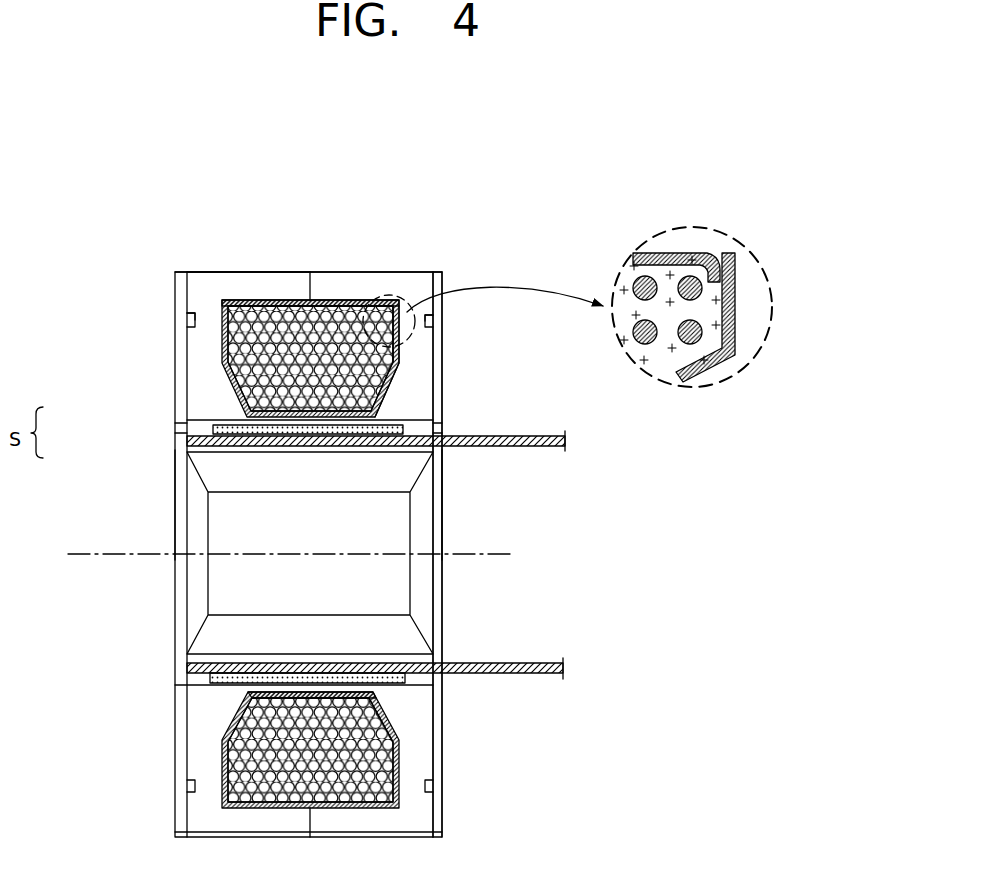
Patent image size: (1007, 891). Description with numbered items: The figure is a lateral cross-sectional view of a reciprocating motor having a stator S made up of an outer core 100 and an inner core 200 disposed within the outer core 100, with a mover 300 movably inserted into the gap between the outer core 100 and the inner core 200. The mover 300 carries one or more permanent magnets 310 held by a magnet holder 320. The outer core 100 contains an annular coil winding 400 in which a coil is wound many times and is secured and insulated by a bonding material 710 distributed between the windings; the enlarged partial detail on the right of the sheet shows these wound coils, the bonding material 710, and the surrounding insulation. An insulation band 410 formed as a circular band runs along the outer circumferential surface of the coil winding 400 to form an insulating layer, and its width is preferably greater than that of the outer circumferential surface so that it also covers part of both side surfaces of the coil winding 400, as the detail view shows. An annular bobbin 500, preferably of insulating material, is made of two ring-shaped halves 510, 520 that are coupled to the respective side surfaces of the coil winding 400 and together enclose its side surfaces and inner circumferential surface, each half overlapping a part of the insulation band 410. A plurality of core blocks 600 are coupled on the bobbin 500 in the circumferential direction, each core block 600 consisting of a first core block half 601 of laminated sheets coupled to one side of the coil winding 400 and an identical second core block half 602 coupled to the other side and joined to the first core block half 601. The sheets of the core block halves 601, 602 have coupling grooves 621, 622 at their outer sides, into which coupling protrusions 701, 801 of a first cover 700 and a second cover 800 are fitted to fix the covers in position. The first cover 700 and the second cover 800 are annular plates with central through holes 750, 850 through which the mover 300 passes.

The outer core 100 is at (303, 319).
The inner core 200 is at (185, 465).
The mover 300 is at (296, 701).
The permanent magnet 310 is at (237, 695).
The magnet holder 320 is at (232, 677).
The coil winding 400 is at (246, 383).
The insulation band 410 is at (232, 298).
The bobbin 500 is at (326, 701).
The bobbin half 510 is at (299, 302).
The bobbin half 520 is at (399, 376).
The core block 600 is at (233, 123).
The first core block half 601 is at (240, 270).
The second core block half 602 is at (398, 278).
The coupling groove 621 is at (196, 312).
The coupling groove 622 is at (426, 316).
The first cover 700 is at (176, 267).
The coupling protrusion 701 is at (188, 323).
The bonding material 710 is at (392, 358).
The through hole 750 is at (183, 508).
The second cover 800 is at (433, 267).
The coupling protrusion 801 is at (432, 326).
The through hole 850 is at (441, 508).